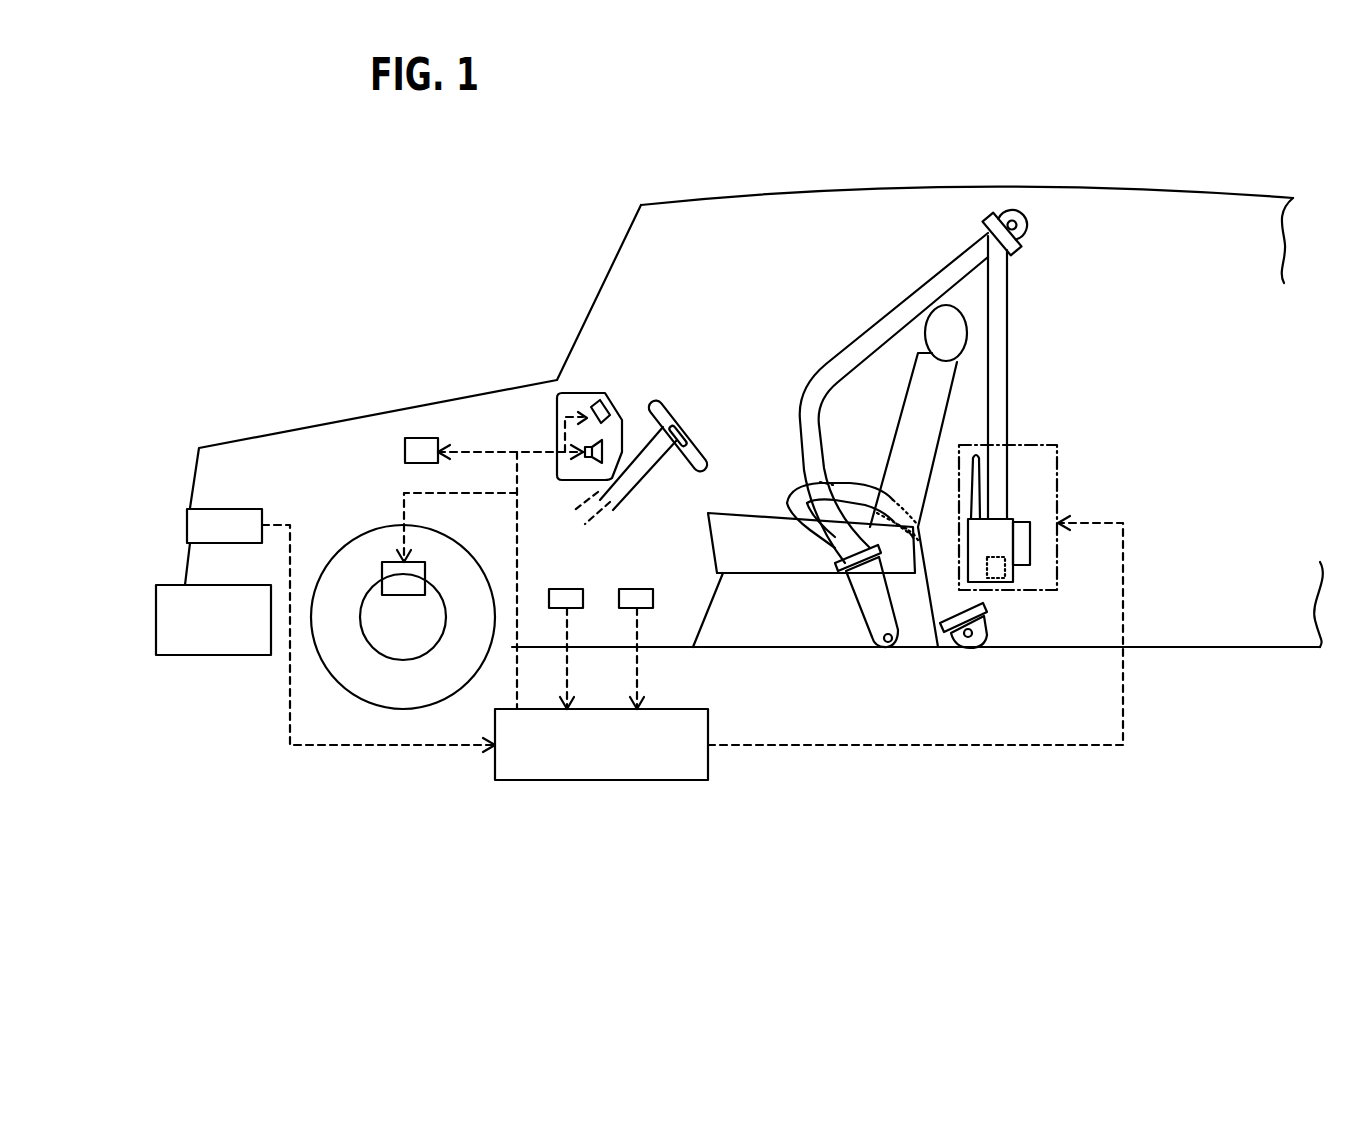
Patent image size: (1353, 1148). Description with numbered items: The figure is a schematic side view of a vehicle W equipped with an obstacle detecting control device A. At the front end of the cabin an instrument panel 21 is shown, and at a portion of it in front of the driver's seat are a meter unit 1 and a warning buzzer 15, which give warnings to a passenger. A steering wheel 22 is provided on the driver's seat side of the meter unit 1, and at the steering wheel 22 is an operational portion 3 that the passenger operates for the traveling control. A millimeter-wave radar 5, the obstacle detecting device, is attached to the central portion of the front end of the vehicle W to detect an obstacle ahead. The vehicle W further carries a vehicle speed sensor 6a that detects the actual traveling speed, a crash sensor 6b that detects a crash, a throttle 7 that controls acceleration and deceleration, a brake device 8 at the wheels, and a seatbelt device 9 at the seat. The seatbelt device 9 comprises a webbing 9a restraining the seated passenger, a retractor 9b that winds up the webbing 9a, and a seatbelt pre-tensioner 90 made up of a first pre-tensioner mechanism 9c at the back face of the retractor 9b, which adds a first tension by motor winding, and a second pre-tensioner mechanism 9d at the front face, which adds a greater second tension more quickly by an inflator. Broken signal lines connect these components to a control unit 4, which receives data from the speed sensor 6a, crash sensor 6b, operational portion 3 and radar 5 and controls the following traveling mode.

The meter unit 1 is at (600, 392).
The operational portion 3 is at (688, 440).
The control unit 4 is at (598, 782).
The millimeter-wave radar 5 is at (187, 523).
The vehicle speed sensor 6a is at (567, 589).
The crash sensor 6b is at (636, 589).
The throttle 7 is at (405, 450).
The brake device 8 is at (347, 542).
The seatbelt device 9 is at (1065, 388).
The webbing 9a is at (1007, 310).
The retractor 9b is at (993, 583).
The first pre-tensioner mechanism 9c is at (1030, 558).
The second pre-tensioner mechanism 9d is at (967, 533).
The warning buzzer 15 is at (622, 452).
The instrument panel 21 is at (562, 385).
The steering wheel 22 is at (673, 403).
The seatbelt pre-tensioner 90 is at (1062, 472).
The vehicle W is at (900, 188).
The obstacle detecting control device A is at (410, 813).